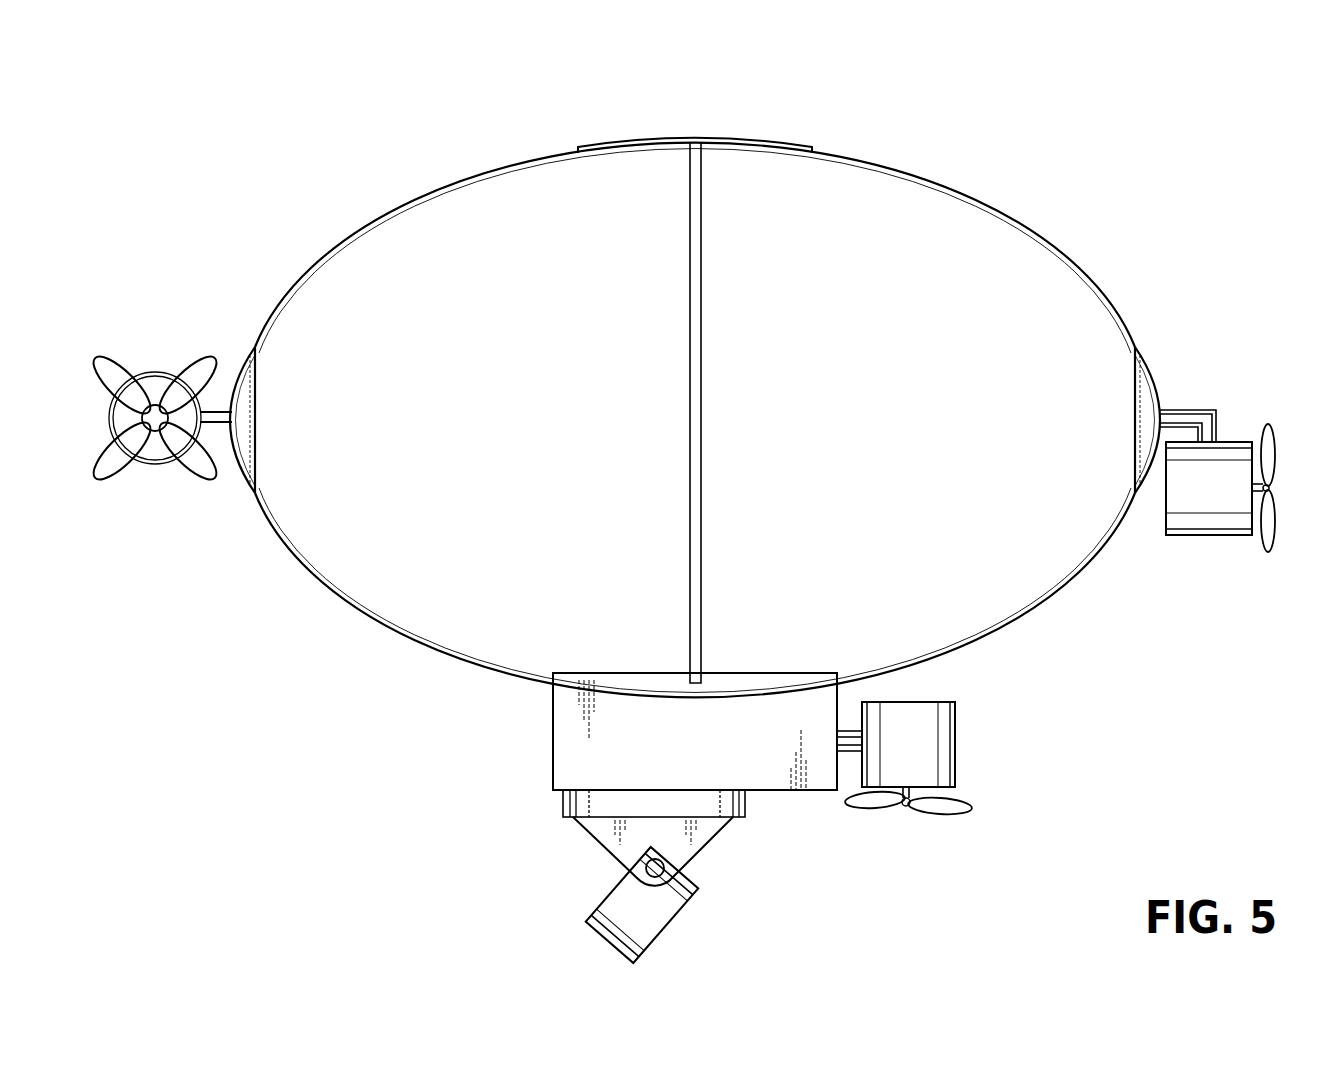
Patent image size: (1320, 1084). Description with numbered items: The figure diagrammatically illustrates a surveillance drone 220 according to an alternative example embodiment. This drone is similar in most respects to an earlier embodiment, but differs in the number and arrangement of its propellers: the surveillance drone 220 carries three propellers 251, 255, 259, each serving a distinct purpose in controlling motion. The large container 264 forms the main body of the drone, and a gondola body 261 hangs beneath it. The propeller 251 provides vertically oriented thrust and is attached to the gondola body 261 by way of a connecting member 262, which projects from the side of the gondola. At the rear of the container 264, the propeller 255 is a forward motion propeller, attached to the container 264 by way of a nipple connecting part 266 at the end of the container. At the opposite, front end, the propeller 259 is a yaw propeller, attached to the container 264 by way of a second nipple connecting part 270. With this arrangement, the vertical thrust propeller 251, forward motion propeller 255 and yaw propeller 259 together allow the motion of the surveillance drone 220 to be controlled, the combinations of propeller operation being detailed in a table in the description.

The surveillance drone 220 is at (308, 118).
The propeller 251 is at (954, 808).
The propeller 255 is at (1273, 438).
The propeller 259 is at (112, 370).
The gondola body 261 is at (717, 746).
The connecting member 262 is at (849, 748).
The container 264 is at (962, 436).
The nipple connecting part 266 is at (1157, 385).
The nipple connecting part 270 is at (243, 385).